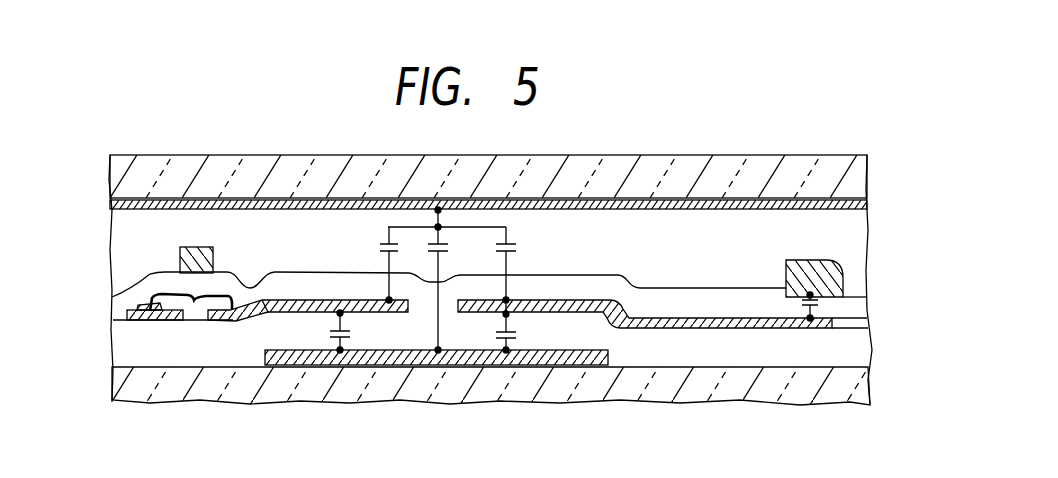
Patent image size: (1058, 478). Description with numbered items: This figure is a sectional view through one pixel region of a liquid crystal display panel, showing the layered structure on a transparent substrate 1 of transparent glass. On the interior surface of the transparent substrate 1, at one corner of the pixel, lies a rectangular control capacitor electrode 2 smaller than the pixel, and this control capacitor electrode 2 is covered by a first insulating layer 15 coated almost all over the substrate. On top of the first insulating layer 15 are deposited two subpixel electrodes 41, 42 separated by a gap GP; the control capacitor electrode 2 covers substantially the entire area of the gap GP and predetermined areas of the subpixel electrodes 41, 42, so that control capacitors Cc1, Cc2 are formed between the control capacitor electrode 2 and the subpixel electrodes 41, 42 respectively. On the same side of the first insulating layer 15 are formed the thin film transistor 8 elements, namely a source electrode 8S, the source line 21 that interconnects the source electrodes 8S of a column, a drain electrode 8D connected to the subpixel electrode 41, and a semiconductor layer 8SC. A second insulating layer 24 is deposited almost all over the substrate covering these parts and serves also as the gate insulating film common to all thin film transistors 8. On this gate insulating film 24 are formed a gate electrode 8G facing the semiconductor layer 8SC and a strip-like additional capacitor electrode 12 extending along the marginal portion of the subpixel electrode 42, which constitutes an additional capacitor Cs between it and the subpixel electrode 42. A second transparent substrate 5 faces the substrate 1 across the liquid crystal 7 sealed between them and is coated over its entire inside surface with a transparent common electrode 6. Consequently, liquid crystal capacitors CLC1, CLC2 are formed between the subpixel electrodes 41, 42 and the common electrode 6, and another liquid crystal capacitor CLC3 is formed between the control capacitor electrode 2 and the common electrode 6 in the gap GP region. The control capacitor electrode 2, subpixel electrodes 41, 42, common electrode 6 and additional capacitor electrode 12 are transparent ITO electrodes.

The transparent substrate 1 is at (862, 388).
The control capacitor electrode 2 is at (573, 352).
The transparent substrate 5 is at (870, 168).
The transparent common electrode 6 is at (870, 203).
The liquid crystal 7 is at (862, 238).
The thin film transistor 8 is at (165, 332).
The gate electrode 8G is at (195, 252).
The source electrode 8S is at (160, 311).
The semiconductor layer 8SC is at (191, 298).
The drain electrode 8D is at (226, 312).
The additional capacitor electrode 12 is at (814, 275).
The first insulating layer 15 is at (860, 350).
The source line 21 is at (150, 308).
The second insulating layer 24 is at (862, 316).
The subpixel electrode 41 is at (273, 299).
The subpixel electrode 42 is at (707, 318).
The gap GP is at (422, 302).
The liquid crystal capacitor CLC1 is at (360, 265).
The liquid crystal capacitor CLC2 is at (459, 280).
The liquid crystal capacitor CLC3 is at (529, 265).
The control capacitor Cc1 is at (358, 331).
The control capacitor Cc2 is at (525, 326).
The additional capacitor Cs is at (798, 305).